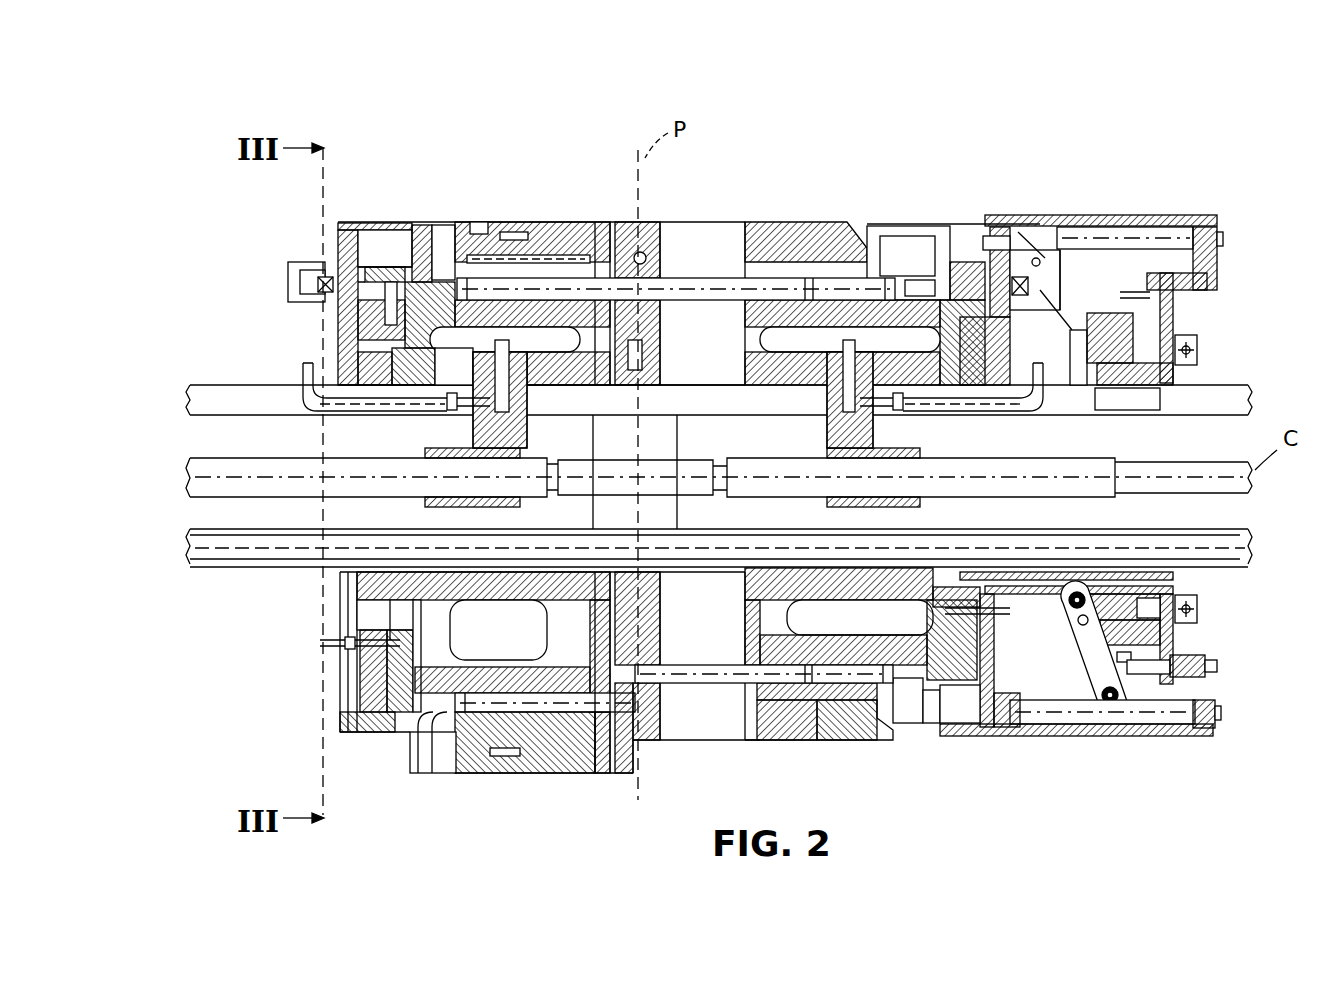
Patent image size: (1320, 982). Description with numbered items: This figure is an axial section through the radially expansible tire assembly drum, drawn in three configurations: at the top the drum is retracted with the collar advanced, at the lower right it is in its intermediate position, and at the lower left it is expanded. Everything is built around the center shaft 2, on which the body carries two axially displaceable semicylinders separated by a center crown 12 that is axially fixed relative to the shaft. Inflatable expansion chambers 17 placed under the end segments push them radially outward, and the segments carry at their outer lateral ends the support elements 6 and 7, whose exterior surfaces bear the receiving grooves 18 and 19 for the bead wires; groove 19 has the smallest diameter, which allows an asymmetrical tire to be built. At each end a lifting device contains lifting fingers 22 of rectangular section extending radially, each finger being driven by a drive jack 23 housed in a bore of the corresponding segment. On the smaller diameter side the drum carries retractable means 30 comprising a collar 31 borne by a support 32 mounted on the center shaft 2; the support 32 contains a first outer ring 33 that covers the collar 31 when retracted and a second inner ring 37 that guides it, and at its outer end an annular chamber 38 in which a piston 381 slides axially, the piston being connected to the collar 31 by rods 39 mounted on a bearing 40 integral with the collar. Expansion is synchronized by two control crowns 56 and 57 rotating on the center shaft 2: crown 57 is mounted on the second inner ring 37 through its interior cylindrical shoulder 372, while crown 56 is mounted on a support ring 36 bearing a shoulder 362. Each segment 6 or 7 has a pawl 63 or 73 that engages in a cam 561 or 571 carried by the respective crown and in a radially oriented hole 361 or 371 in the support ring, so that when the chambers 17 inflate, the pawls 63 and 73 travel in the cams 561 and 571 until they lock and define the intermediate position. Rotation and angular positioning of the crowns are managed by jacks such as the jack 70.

The center shaft 2 is at (290, 465).
The support element 6 is at (490, 238).
The support element 7 is at (843, 226).
The center crown 12 is at (660, 245).
The expansion chamber 17 is at (358, 352).
The groove 18 is at (478, 222).
The groove 19 is at (870, 226).
The lifting finger 22 is at (422, 235).
The drive jack 23 is at (358, 327).
The retractable means 30 is at (1115, 126).
The collar 31 is at (915, 224).
The support 32 is at (1238, 205).
The first outer ring 33 is at (1060, 218).
The support ring 36 is at (340, 720).
The second inner ring 37 is at (1000, 226).
The annular chamber 38 is at (1185, 383).
The rod 39 is at (1070, 298).
The bearing 40 is at (1105, 226).
The control crown 56 is at (345, 686).
The control crown 57 is at (1010, 738).
The pawl 63 is at (357, 722).
The jack 70 is at (320, 268).
The pawl 73 is at (980, 715).
The hole 361 is at (350, 601).
The shoulder 362 is at (340, 240).
The hole 371 is at (1000, 622).
The interior cylindrical shoulder 372 is at (985, 238).
The piston 381 is at (1197, 350).
The cam 561 is at (347, 657).
The cam 571 is at (1043, 738).